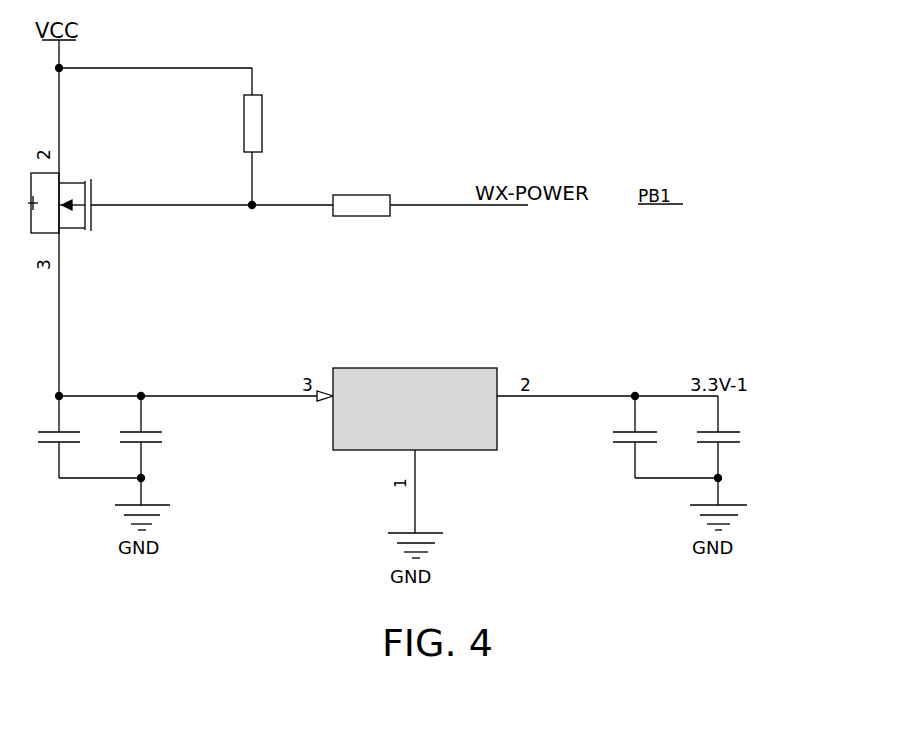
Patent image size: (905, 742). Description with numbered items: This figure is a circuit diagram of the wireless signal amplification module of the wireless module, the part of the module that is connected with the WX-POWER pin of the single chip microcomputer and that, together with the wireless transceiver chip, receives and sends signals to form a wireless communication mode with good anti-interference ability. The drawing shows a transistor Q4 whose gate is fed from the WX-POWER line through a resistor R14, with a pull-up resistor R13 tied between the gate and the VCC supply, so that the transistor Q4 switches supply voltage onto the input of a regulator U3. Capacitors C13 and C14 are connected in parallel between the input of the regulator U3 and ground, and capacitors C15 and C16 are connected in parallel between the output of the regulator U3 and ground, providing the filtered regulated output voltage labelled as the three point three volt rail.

The P-channel MOSFET AO3401A Q4 is at (180, 193).
The resistor 10K R13 is at (274, 123).
The resistor 4.7K R14 is at (430, 208).
The voltage regulator LD1117S33TR U3 is at (415, 426).
The capacitor 106 C13 is at (89, 437).
The capacitor 104 C14 is at (162, 437).
The capacitor 106 C15 is at (665, 437).
The capacitor 104 C16 is at (737, 437).